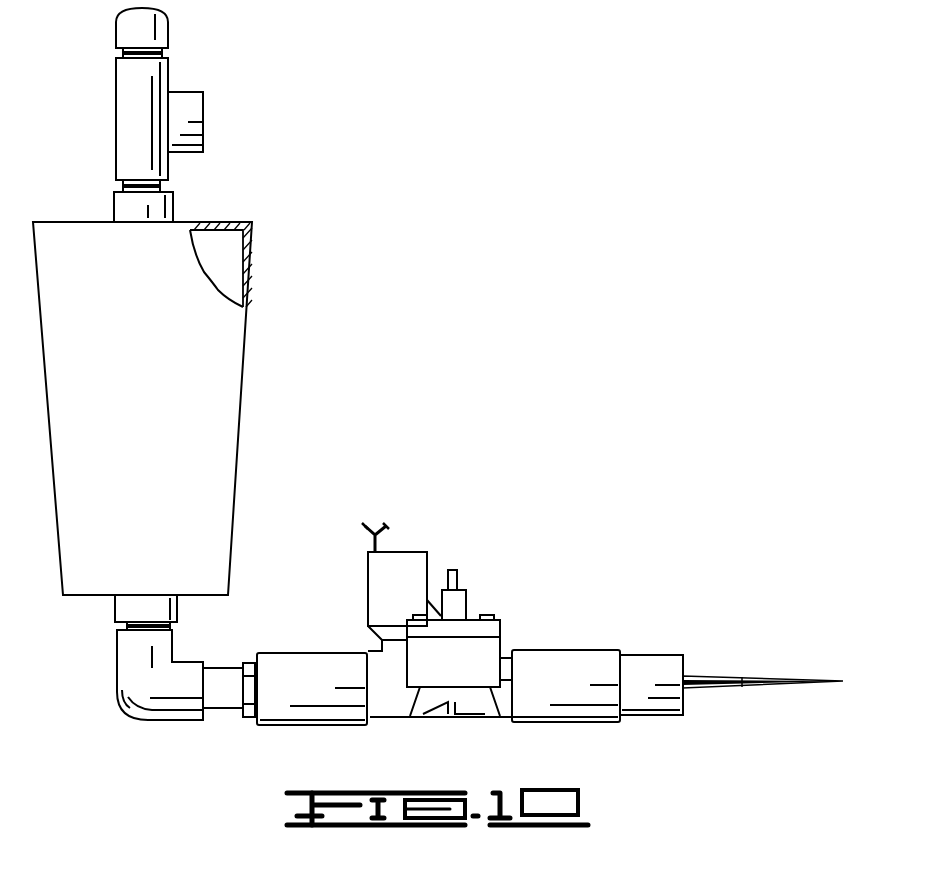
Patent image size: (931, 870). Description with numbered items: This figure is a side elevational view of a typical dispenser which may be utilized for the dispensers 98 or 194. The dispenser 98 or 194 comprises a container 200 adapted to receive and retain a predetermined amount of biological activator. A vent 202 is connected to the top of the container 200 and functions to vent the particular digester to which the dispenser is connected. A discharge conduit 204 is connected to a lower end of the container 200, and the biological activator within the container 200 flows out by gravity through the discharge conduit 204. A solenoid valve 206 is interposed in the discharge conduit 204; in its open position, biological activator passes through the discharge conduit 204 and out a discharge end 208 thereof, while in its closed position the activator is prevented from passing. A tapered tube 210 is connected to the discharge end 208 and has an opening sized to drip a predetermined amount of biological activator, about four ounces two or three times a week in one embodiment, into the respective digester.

The vent 202 is at (188, 92).
The container 200 is at (244, 363).
The dispenser 98 is at (299, 261).
The dispenser 194 is at (256, 251).
The discharge conduit 204 is at (230, 702).
The solenoid valve 206 is at (470, 622).
The discharge end 208 is at (683, 661).
The tapered tube 210 is at (748, 690).